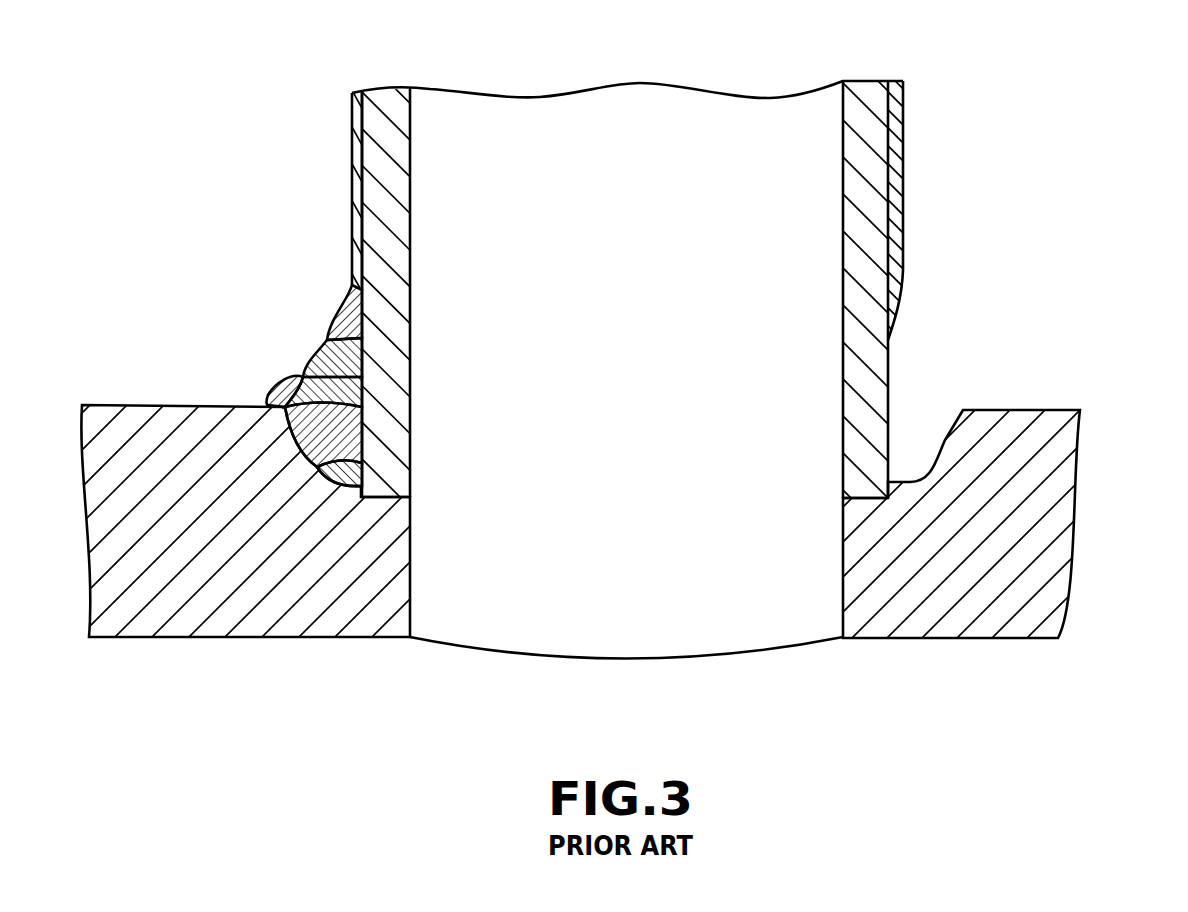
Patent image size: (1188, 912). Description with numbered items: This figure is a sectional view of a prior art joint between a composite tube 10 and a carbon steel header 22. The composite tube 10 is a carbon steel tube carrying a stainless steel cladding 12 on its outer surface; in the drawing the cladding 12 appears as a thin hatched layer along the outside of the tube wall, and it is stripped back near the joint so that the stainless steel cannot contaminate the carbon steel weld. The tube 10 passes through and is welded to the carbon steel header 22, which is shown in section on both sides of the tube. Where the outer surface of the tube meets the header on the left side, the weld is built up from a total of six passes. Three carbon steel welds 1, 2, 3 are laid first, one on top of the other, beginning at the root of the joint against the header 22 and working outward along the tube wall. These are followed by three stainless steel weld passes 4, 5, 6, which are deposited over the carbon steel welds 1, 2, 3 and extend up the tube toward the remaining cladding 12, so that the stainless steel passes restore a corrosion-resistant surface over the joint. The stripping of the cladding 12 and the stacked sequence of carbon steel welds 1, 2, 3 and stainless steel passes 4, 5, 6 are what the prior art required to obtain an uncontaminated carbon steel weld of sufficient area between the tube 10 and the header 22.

The carbon steel weld 1 is at (362, 466).
The carbon steel weld 2 is at (362, 432).
The carbon steel weld 3 is at (362, 393).
The stainless steel weld pass 4 is at (282, 384).
The stainless steel weld pass 5 is at (320, 352).
The stainless steel weld pass 6 is at (345, 300).
The composite tube 10 is at (860, 82).
The stainless steel cladding 12 is at (352, 146).
The carbon steel header 22 is at (1075, 525).